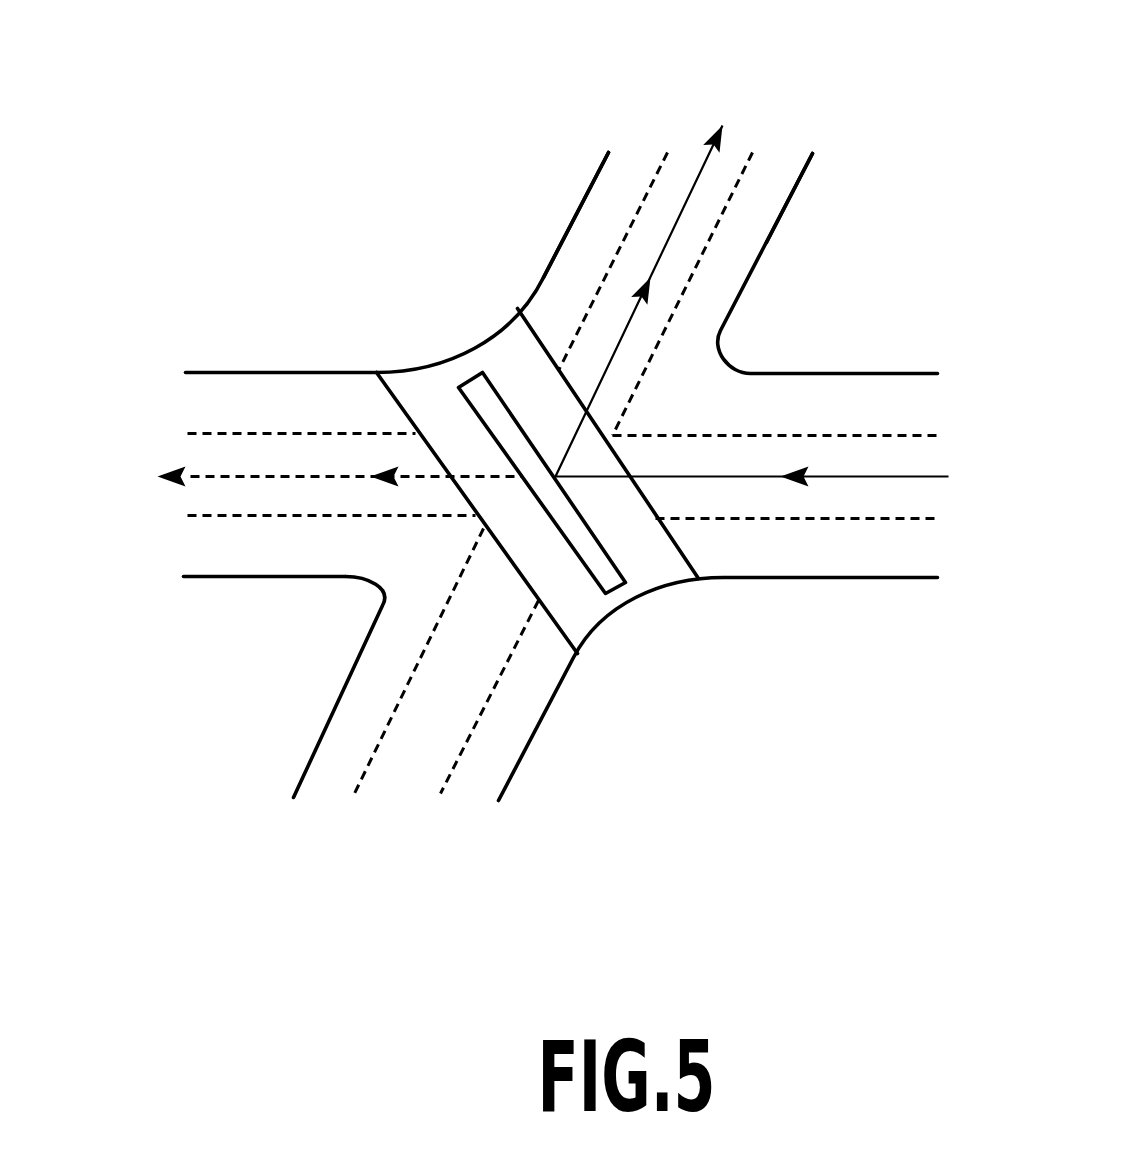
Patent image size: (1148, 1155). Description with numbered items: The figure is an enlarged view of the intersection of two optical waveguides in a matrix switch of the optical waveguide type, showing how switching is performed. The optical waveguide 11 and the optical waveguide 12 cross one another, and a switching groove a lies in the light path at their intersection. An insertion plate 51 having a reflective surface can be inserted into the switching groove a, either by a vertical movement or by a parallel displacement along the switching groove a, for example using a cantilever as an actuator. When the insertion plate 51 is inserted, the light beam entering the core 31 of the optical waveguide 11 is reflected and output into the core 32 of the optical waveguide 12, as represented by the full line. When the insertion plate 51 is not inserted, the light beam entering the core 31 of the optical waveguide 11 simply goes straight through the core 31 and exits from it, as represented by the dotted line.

The optical waveguide 11 is at (178, 405).
The optical waveguide 12 is at (638, 125).
The core 31 is at (255, 502).
The core 32 is at (705, 227).
The insertion plate 51 is at (617, 590).
The switching groove a is at (428, 384).